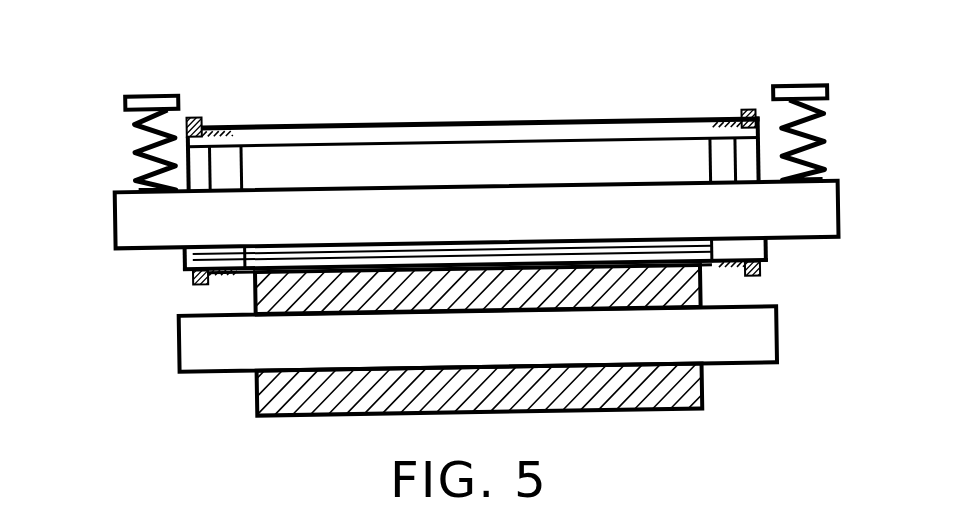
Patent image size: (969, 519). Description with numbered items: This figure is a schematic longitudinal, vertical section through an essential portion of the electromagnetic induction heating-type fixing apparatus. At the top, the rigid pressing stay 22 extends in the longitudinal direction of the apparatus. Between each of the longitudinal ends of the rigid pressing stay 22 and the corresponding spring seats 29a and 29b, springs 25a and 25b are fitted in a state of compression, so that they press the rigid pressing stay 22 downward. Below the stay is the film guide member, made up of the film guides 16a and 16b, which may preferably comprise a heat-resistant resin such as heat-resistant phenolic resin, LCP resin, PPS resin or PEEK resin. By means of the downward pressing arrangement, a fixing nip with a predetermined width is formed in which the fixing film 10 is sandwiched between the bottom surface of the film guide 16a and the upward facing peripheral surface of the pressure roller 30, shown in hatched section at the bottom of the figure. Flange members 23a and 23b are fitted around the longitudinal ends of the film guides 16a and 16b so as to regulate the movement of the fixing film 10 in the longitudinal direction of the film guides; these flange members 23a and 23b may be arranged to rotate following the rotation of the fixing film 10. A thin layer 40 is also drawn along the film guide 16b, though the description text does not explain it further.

The fixing film 10 is at (505, 123).
The film guide 16a is at (767, 253).
The film guide 16b is at (354, 131).
The rigid pressing stay 22 is at (834, 186).
The flange member 23a is at (197, 115).
The flange member 23b is at (750, 116).
The spring 25a is at (137, 135).
The spring 25b is at (820, 126).
The spring seat 29a is at (145, 90).
The spring seat 29b is at (800, 90).
The pressure roller 30 is at (701, 389).
The film 40 is at (609, 142).